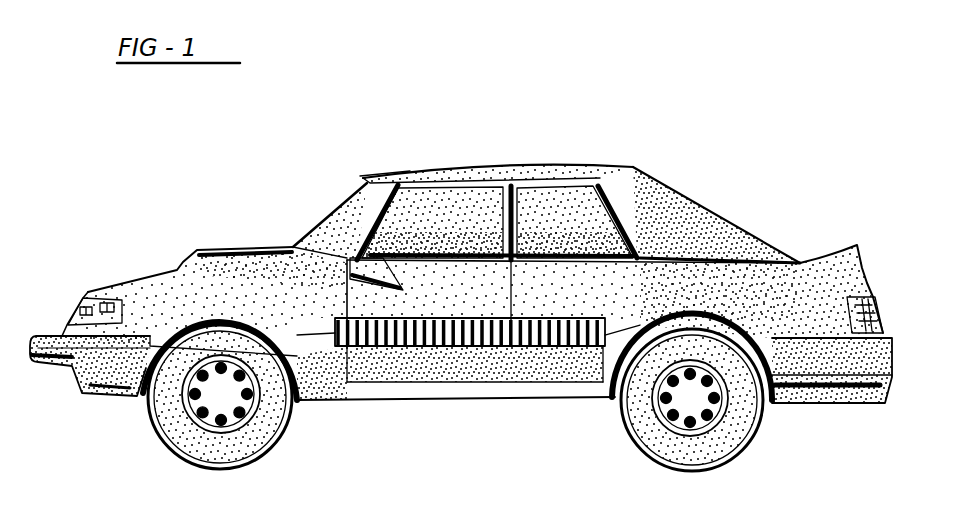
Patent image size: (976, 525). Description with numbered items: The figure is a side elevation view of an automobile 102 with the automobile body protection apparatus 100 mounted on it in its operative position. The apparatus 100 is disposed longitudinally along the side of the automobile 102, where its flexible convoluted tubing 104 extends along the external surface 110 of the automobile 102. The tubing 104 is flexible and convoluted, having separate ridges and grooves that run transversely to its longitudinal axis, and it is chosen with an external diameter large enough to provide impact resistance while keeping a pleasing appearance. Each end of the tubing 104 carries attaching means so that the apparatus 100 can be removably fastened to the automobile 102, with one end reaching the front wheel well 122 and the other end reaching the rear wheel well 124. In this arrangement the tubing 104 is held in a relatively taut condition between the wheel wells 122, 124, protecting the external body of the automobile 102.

The automobile body protection apparatus 100 is at (466, 350).
The automobile 102 is at (764, 223).
The flexible convoluted tubing 104 is at (530, 348).
The external surface 110 is at (453, 293).
The front wheel well 122 is at (297, 400).
The rear wheel well 124 is at (613, 400).